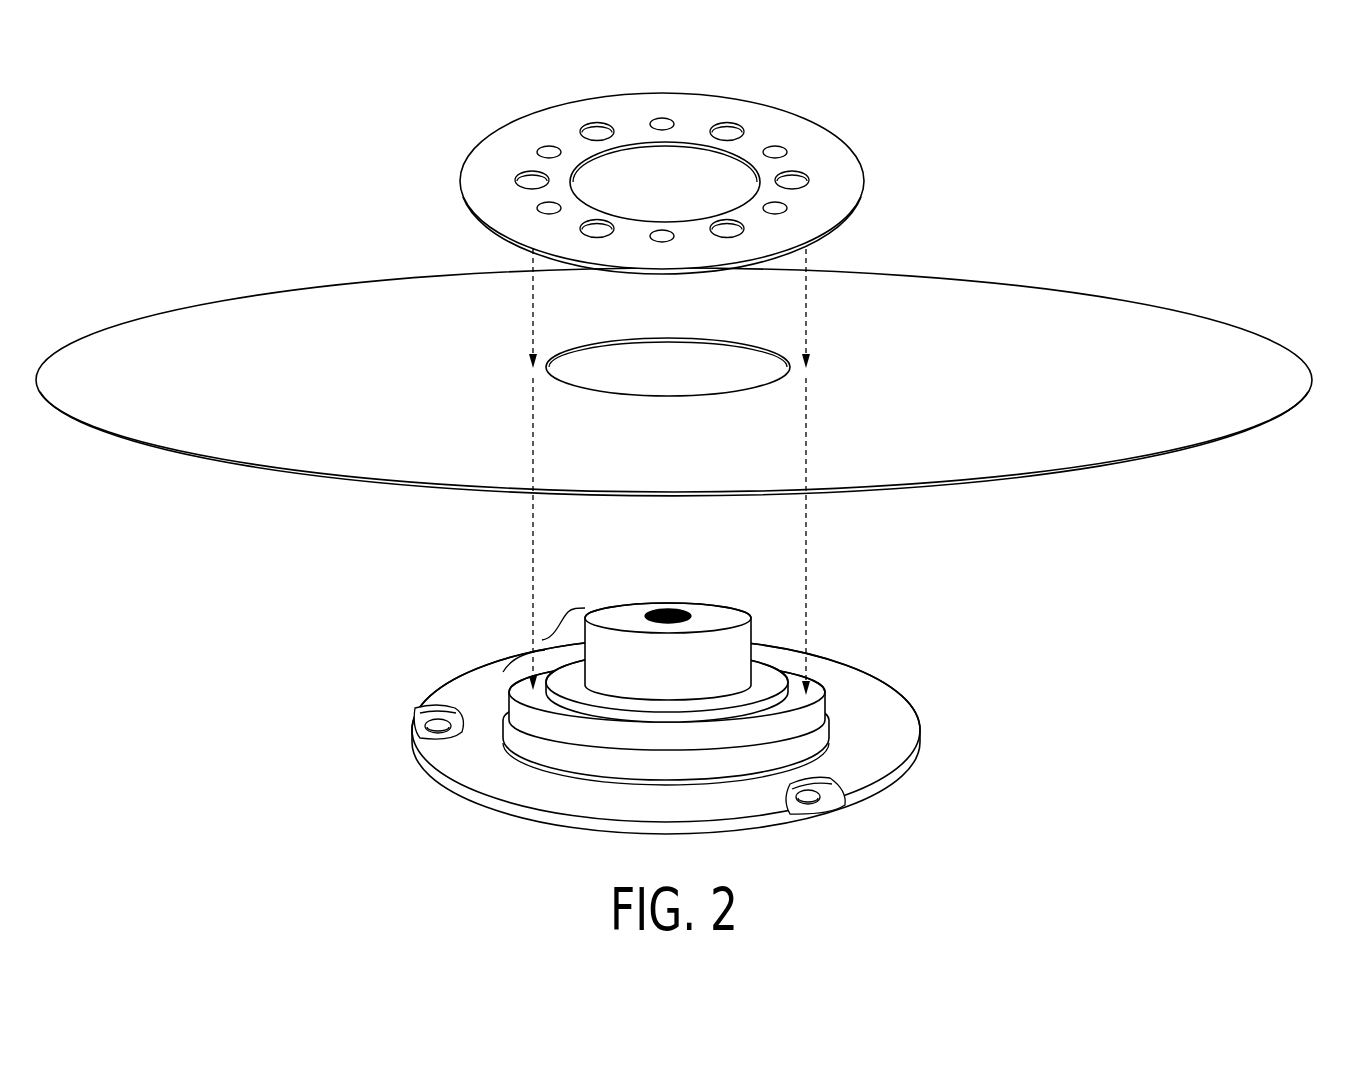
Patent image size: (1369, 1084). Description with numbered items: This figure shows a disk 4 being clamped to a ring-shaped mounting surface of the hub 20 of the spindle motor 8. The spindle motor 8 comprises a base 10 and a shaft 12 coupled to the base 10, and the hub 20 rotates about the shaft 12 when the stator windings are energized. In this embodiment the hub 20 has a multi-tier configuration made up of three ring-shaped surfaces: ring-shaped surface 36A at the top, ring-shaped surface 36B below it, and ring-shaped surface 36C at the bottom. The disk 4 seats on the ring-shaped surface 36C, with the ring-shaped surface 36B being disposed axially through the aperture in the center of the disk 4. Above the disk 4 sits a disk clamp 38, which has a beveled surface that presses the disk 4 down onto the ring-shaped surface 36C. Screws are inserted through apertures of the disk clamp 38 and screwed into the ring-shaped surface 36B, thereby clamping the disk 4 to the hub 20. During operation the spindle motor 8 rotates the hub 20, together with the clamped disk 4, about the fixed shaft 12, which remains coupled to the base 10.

The disk 4 is at (1313, 380).
The spindle motor 8 is at (1005, 609).
The base 10 is at (918, 727).
The shaft 12 is at (669, 600).
The hub 20 is at (537, 642).
The ring-shaped surface 36A is at (626, 605).
The ring-shaped surface 36B is at (765, 658).
The ring-shaped surface 36C is at (813, 690).
The disk clamp 38 is at (868, 187).